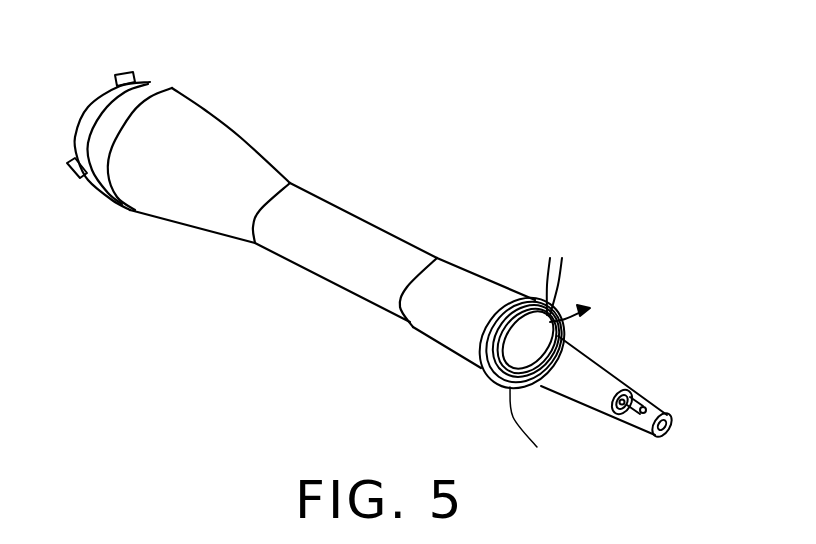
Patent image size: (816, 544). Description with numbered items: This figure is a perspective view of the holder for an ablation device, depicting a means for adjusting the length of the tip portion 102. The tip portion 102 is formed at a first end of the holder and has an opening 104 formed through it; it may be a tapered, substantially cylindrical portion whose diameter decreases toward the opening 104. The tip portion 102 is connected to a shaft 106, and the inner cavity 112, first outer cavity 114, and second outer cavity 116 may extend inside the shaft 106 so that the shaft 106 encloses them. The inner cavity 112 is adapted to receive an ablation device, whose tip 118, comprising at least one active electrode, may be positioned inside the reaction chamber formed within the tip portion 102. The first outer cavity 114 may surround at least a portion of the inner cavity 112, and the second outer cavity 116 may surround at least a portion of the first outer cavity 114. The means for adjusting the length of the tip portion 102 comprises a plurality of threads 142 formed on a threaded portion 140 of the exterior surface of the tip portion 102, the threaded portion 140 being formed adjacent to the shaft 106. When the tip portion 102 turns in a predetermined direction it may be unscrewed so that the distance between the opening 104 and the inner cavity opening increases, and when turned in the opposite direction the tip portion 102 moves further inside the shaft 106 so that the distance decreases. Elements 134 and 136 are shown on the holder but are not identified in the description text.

The tip portion 102 is at (602, 362).
The opening 104 is at (670, 423).
The shaft 106 is at (342, 237).
The inner cavity 112 is at (613, 413).
The first outer cavity 114 is at (638, 404).
The second outer cavity 116 is at (630, 390).
The tip of ablation device 118 is at (647, 408).
The tab 134 is at (67, 176).
The tab 136 is at (124, 77).
The threaded portion 140 is at (512, 368).
The threads 142 is at (565, 275).